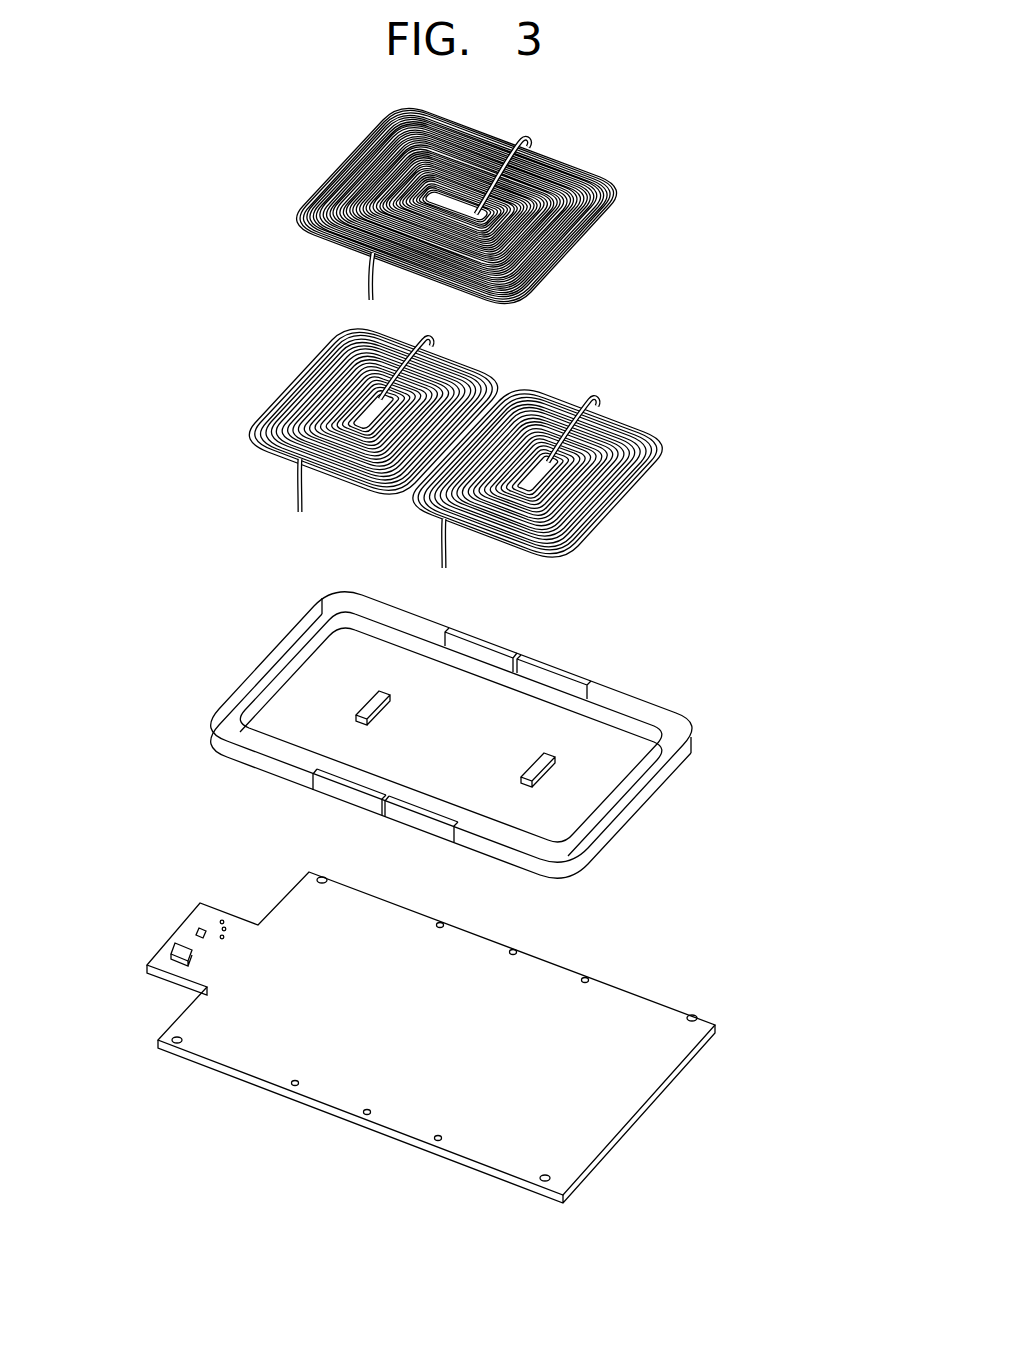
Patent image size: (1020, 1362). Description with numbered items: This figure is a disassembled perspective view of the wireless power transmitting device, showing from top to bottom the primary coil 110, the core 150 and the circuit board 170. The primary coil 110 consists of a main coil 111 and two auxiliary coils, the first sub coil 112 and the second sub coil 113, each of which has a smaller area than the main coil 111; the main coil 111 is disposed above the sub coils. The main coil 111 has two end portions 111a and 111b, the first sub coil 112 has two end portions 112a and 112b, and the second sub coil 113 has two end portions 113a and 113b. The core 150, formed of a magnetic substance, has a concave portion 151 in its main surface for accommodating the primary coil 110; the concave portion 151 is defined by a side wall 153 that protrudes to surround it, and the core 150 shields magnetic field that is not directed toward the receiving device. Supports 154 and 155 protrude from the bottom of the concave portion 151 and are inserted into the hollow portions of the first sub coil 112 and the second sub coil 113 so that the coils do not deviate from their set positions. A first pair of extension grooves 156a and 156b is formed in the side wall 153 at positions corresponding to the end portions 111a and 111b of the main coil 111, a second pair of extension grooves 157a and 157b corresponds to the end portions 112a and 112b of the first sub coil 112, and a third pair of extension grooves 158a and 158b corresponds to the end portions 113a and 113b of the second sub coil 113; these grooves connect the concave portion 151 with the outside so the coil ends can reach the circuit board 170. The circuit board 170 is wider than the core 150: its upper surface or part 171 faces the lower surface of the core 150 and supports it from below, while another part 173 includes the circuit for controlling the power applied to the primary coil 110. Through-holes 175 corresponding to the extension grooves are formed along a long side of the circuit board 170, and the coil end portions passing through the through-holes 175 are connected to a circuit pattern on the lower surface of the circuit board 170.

The primary coil 110 is at (714, 286).
The main coil 111 is at (582, 248).
The end portion of main coil 111a is at (531, 144).
The end portion of main coil 111b is at (368, 291).
The first sub coil 112 is at (638, 497).
The end portion of first sub coil 112a is at (598, 405).
The end portion of first sub coil 112b is at (441, 556).
The second sub coil 113 is at (298, 366).
The end portion of second sub coil 113a is at (433, 343).
The end portion of second sub coil 113b is at (297, 494).
The core 150 is at (680, 685).
The concave portion 151 is at (590, 790).
The side wall 153 is at (604, 828).
The support 154 is at (554, 753).
The support 155 is at (362, 702).
The extension groove 156a is at (515, 656).
The extension groove 156b is at (385, 812).
The extension groove 157a is at (588, 684).
The extension groove 157b is at (455, 836).
The extension groove 158a is at (446, 632).
The extension groove 158b is at (315, 788).
The circuit board 170 is at (705, 1064).
The part of circuit board 171 is at (605, 1105).
The part of circuit board 173 is at (180, 930).
The through-holes 175 is at (438, 1141).